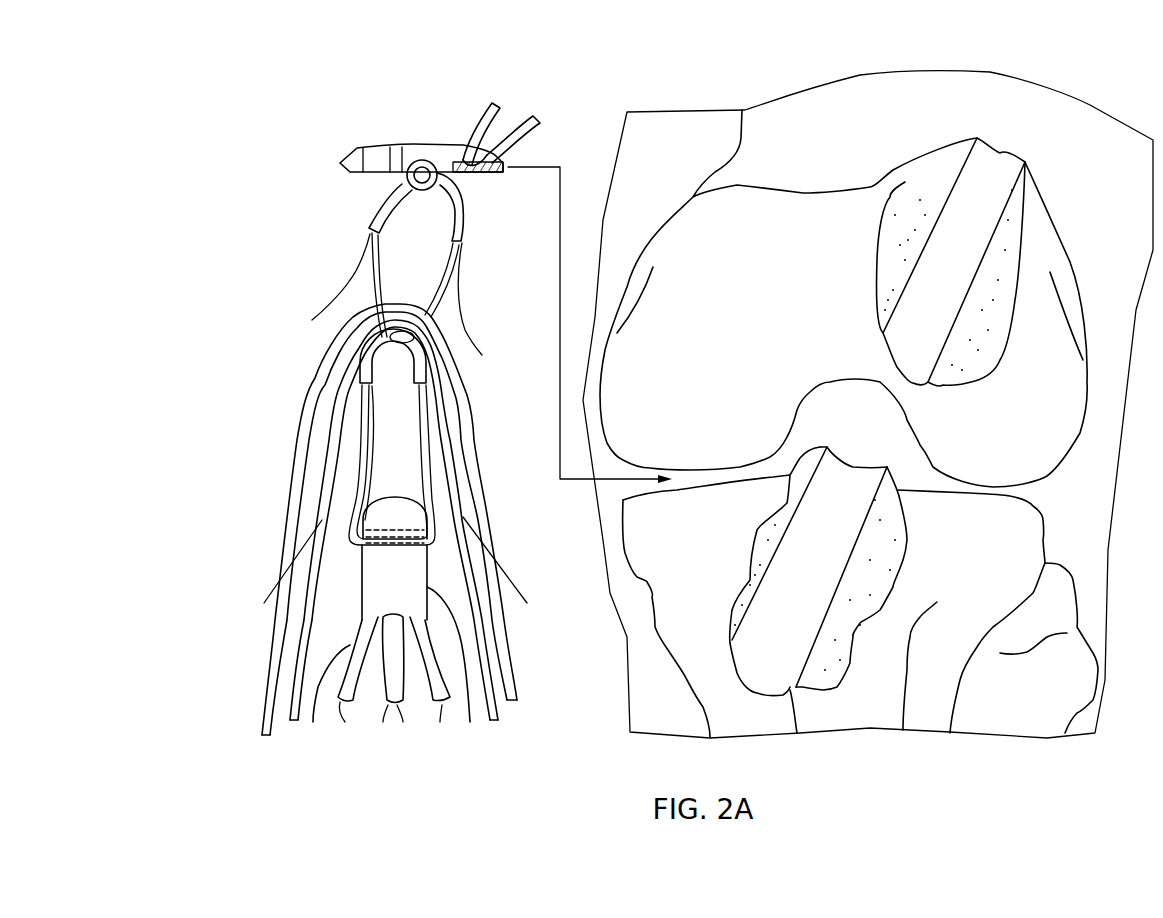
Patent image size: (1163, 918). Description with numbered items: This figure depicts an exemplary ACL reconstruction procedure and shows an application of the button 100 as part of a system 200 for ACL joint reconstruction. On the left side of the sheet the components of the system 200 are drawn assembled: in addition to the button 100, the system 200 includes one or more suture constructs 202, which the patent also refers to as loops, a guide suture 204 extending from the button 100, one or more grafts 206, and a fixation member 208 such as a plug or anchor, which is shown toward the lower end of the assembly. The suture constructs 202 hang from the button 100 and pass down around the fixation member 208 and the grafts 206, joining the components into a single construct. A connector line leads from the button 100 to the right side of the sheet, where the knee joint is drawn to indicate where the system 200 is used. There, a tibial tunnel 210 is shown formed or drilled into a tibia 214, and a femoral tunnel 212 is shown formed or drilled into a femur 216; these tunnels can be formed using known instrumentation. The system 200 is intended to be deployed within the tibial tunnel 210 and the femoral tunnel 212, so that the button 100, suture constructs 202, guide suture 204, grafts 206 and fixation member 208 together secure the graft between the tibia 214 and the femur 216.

The system 200 is at (345, 80).
The button 100 is at (413, 143).
The suture construct 202 is at (478, 250).
The guide suture 204 is at (480, 118).
The graft 206 is at (317, 498).
The fixation member 208 is at (441, 553).
The tibial tunnel 210 is at (857, 537).
The femoral tunnel 212 is at (957, 318).
The tibia 214 is at (1025, 535).
The femur 216 is at (1050, 443).